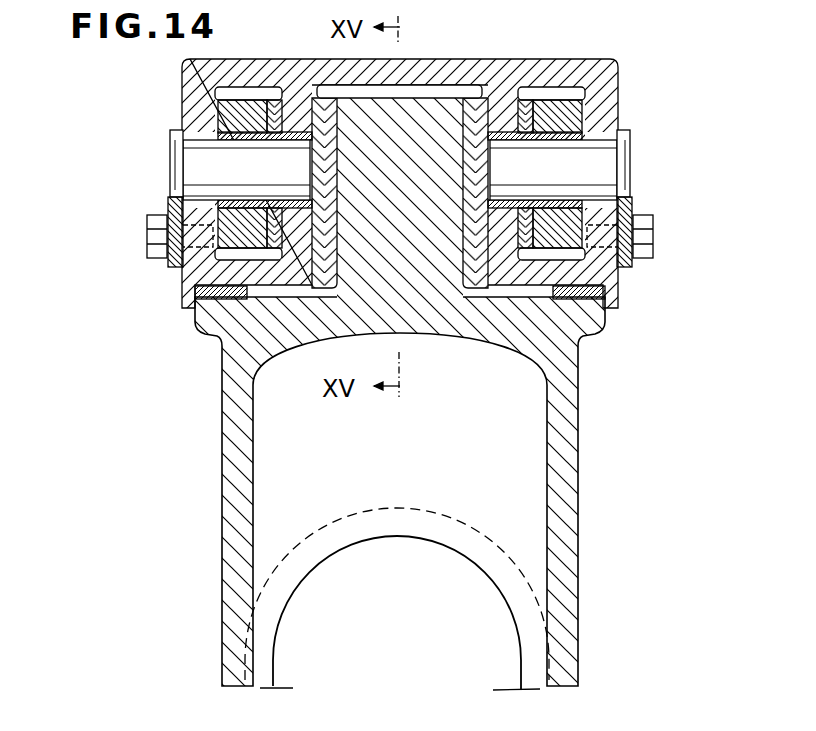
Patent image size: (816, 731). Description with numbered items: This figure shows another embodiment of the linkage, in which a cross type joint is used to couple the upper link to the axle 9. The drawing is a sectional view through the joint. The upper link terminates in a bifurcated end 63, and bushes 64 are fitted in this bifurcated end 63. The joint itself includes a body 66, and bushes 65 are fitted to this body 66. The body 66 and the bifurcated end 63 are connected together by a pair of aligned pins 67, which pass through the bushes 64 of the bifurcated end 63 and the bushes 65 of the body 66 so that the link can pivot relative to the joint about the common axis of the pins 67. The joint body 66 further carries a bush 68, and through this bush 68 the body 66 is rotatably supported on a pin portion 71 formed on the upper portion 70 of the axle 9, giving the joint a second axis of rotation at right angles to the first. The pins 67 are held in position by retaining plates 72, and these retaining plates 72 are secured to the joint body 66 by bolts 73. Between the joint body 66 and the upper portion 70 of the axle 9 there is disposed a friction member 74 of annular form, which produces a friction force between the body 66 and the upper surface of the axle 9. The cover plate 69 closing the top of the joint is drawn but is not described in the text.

The axle 9 is at (562, 596).
The bifurcated end 63 is at (583, 101).
The bushes 64 is at (567, 112).
The bushes 65 is at (523, 107).
The body 66 is at (500, 70).
The aligned pins 67 is at (598, 162).
The bush 68 is at (483, 100).
The cover plate 69 is at (455, 100).
The upper portion 70 is at (550, 345).
The pin portion 71 is at (348, 122).
The retaining plates 72 is at (620, 267).
The bolts 73 is at (645, 233).
The friction member 74 is at (590, 299).